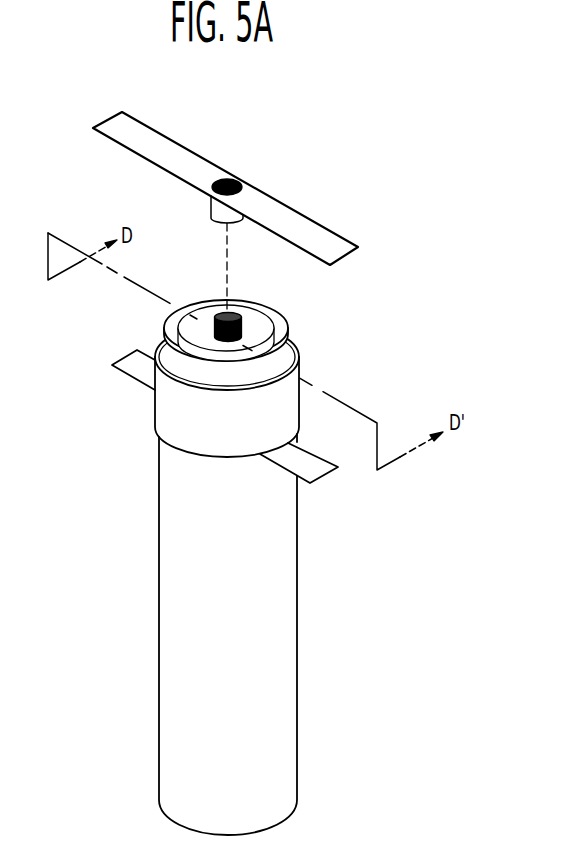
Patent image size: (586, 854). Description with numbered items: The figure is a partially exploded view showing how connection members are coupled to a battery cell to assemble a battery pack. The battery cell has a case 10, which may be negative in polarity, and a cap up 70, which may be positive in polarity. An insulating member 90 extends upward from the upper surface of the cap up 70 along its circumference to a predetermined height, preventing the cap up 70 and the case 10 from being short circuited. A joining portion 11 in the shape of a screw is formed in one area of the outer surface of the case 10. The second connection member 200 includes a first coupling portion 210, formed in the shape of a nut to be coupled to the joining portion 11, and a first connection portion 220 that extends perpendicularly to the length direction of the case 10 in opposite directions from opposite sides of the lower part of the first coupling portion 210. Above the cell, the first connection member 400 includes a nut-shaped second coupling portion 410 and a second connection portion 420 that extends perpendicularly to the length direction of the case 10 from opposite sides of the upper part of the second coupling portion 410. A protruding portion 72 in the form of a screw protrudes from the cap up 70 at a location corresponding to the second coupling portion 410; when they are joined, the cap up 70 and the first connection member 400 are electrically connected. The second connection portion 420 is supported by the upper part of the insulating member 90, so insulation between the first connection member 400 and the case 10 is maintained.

The case 10 is at (178, 664).
The joining portion 11 is at (157, 348).
The cap up 70 is at (257, 322).
The protruding portion 72 is at (220, 313).
The insulating member 90 is at (172, 316).
The second connection member 200 is at (255, 395).
The first coupling portion 210 is at (304, 386).
The first connection portion 220 is at (302, 457).
The first connection member 400 is at (225, 188).
The second coupling portion 410 is at (237, 178).
The second connection portion 420 is at (295, 222).